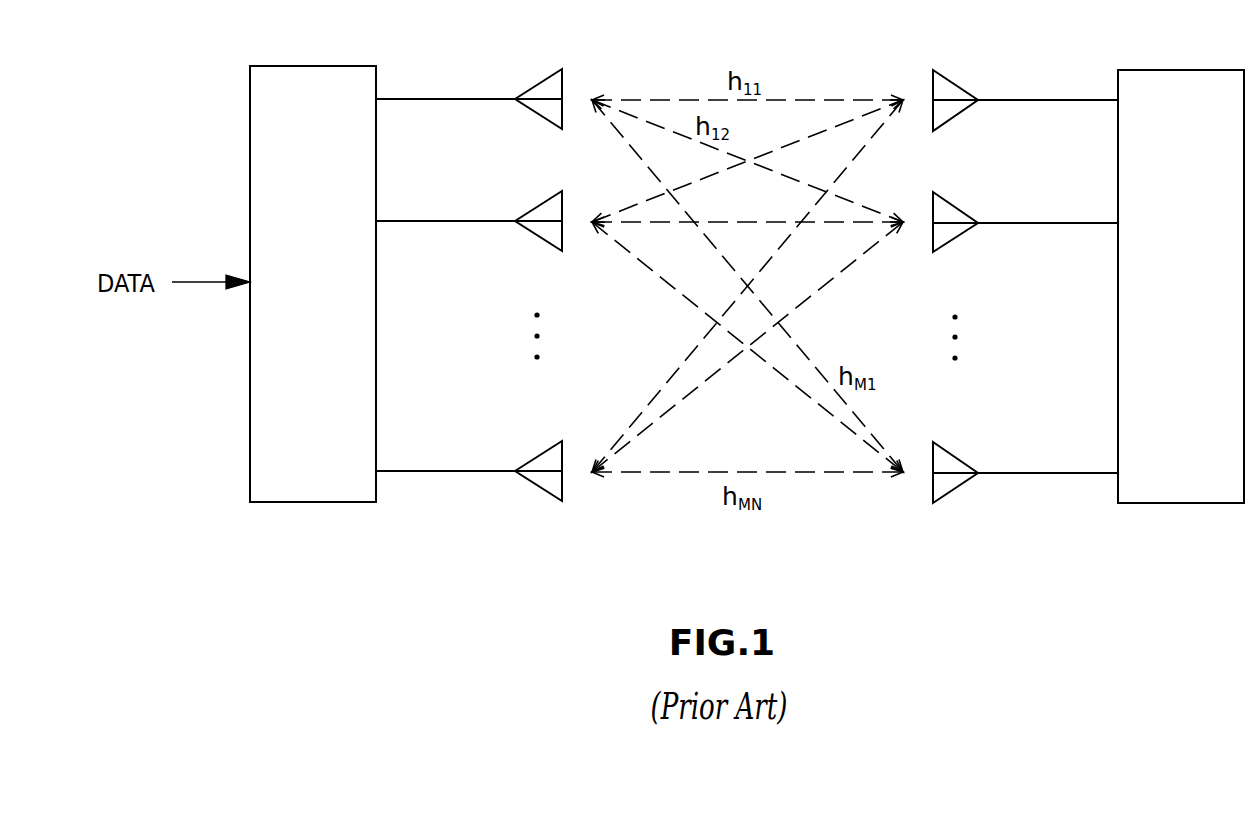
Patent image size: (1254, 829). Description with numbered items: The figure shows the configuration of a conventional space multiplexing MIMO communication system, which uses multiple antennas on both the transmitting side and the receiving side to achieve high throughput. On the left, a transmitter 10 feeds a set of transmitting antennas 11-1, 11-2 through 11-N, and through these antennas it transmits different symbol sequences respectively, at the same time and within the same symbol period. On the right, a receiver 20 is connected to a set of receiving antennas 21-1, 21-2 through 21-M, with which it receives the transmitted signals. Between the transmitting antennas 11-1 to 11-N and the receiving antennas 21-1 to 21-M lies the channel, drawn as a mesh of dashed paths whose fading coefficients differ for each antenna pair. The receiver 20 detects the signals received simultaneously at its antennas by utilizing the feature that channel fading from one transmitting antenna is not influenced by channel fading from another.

The transmitter 10 is at (313, 66).
The transmitting antenna 11-1 is at (522, 95).
The transmitting antenna 11-2 is at (522, 217).
The transmitting antenna 11-N is at (522, 468).
The receiver 20 is at (1182, 70).
The receiving antenna 21-1 is at (962, 92).
The receiving antenna 21-2 is at (962, 215).
The receiving antenna 21-M is at (962, 466).